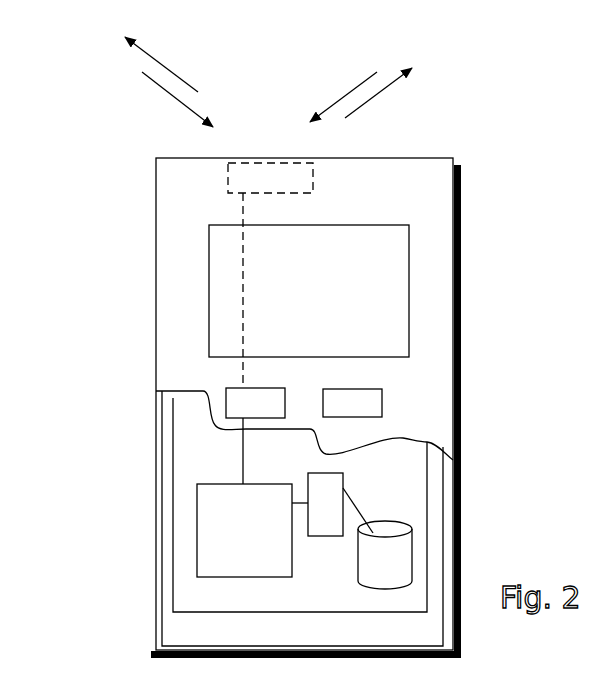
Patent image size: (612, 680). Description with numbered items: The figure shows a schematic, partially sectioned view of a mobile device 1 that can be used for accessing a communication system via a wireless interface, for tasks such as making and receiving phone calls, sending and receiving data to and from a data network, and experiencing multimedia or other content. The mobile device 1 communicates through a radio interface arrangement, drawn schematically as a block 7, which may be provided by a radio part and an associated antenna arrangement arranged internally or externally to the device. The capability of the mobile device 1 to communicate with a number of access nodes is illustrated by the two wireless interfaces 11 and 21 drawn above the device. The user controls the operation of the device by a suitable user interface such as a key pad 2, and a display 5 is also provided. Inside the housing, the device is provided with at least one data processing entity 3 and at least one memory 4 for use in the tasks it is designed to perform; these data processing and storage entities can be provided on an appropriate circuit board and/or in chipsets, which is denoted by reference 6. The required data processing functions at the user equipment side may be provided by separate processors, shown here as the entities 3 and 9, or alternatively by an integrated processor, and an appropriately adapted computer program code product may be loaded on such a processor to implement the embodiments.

The mobile device 1 is at (156, 200).
The key pad 2 is at (228, 404).
The data processing entity 3 is at (207, 514).
The memory 4 is at (378, 568).
The display 5 is at (227, 278).
The circuit board 6 is at (197, 595).
The radio interface arrangement 7 is at (264, 178).
The processor entity 9 is at (325, 488).
The wireless interface 11 is at (185, 80).
The wireless interface 21 is at (320, 115).